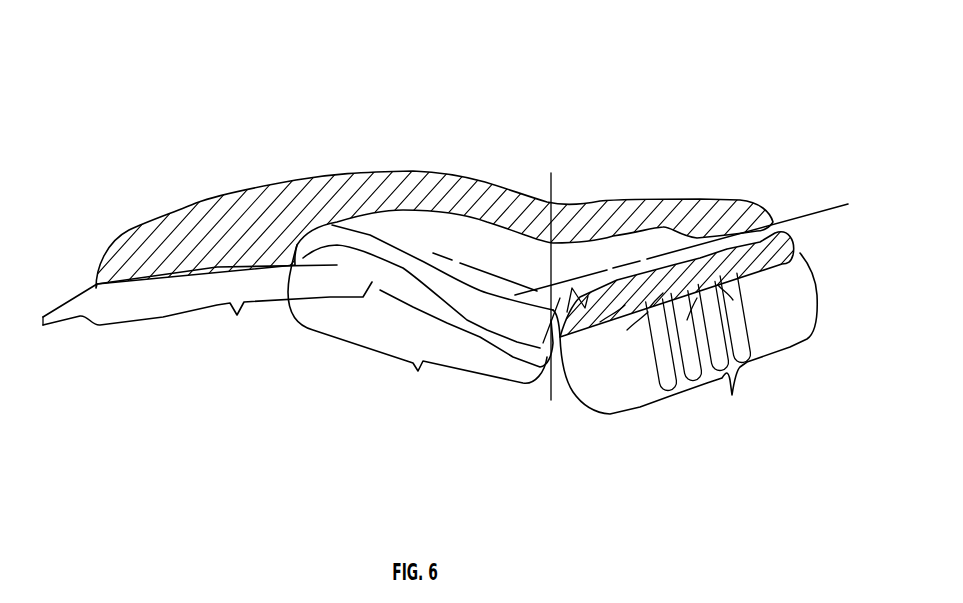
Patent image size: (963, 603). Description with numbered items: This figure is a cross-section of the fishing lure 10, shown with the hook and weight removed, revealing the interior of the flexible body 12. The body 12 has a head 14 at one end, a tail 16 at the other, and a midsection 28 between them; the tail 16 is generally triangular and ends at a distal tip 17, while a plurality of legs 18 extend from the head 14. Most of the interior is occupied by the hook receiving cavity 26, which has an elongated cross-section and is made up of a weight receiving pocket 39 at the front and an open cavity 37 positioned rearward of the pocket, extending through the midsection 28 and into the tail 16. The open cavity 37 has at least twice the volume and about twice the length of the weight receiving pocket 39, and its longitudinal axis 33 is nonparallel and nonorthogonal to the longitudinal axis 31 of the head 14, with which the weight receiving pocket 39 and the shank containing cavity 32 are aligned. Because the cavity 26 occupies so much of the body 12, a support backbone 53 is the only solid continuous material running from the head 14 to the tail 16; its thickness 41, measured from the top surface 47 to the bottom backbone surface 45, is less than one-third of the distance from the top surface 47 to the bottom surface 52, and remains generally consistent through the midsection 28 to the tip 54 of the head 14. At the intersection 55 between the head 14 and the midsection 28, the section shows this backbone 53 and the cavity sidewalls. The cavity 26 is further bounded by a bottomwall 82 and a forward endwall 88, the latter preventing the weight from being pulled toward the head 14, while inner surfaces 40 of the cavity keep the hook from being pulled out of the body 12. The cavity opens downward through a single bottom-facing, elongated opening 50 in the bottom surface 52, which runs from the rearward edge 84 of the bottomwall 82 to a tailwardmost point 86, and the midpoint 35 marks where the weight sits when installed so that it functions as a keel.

The fishing lure 10 is at (757, 112).
The body 12 is at (660, 196).
The head 14 is at (685, 339).
The tail 16 is at (93, 287).
The second distal tip 17 is at (41, 321).
The legs 18 is at (697, 277).
The hook receiving cavity 26 is at (405, 291).
The midsection 28 is at (487, 329).
The longitudinal axis of the head 31 is at (612, 262).
The shank containing cavity 32 is at (772, 214).
The longitudinal axis of the open cavity 33 is at (379, 237).
The midpoint of the weight 35 is at (790, 224).
The open cavity 37 is at (417, 322).
The weight receiving pocket 39 is at (662, 313).
The inner surfaces 40 is at (572, 266).
The thickness 41 is at (524, 190).
The bottom backbone surface 45 is at (479, 218).
The top surface 47 is at (483, 178).
The bottom-facing, elongated opening 50 is at (434, 254).
The bottom surface 52 is at (493, 330).
The support backbone 53 is at (596, 199).
The tip of the head 54 is at (815, 224).
The intersection 55 is at (549, 298).
The bottomwall 82 is at (620, 343).
The rearward edge 84 is at (583, 340).
The tailwardmost point 86 is at (293, 270).
The forward endwall 88 is at (733, 307).